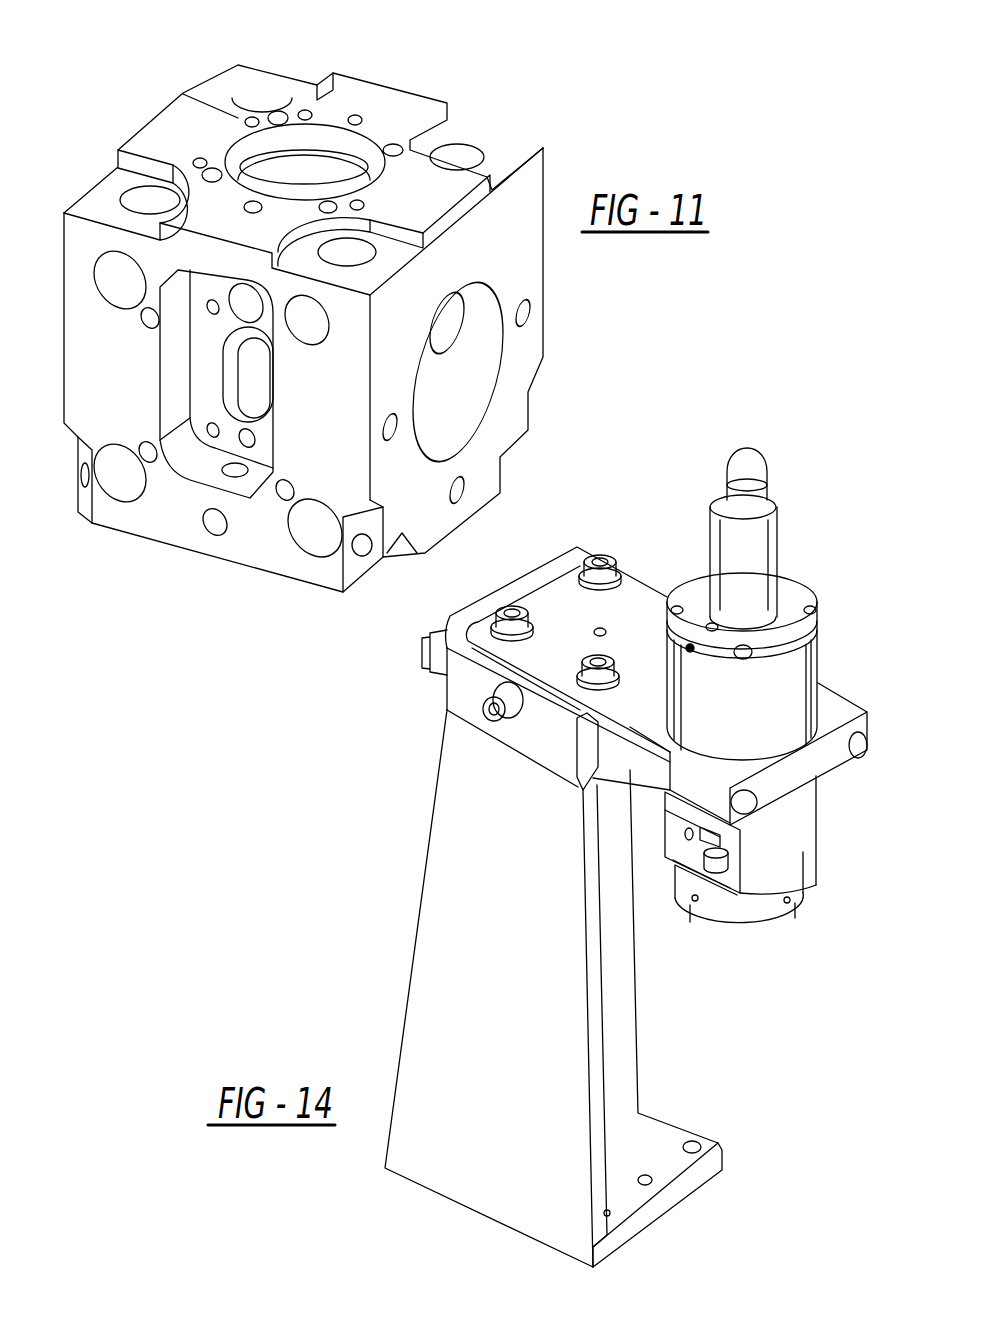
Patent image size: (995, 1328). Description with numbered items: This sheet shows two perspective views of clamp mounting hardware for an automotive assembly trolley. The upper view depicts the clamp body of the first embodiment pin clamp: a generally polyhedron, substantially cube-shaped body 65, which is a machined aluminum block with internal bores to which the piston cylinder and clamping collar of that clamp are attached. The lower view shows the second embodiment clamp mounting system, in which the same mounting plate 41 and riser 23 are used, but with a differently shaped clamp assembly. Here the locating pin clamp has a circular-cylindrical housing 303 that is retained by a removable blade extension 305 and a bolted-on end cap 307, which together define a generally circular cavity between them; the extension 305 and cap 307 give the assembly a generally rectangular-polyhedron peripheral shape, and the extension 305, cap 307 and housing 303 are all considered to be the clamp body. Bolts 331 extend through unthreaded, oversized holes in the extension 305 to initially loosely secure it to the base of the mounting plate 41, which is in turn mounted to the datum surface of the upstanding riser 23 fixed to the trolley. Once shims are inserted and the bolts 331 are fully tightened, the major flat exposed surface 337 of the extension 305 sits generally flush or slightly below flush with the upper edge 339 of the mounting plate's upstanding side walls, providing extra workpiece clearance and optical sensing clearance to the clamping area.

In FIG. 11, the body 65 is at (537, 115).
In FIG. 14, the riser 23 is at (470, 868).
In FIG. 14, the mounting plate 41 is at (465, 682).
In FIG. 14, the circular-cylindrical housing 303 is at (783, 677).
In FIG. 14, the blade extension 305 is at (640, 597).
In FIG. 14, the end cap 307 is at (837, 707).
In FIG. 14, the bolts 331 is at (600, 562).
In FIG. 14, the major flat exposed surface 337 is at (557, 617).
In FIG. 14, the upper edge 339 is at (483, 607).